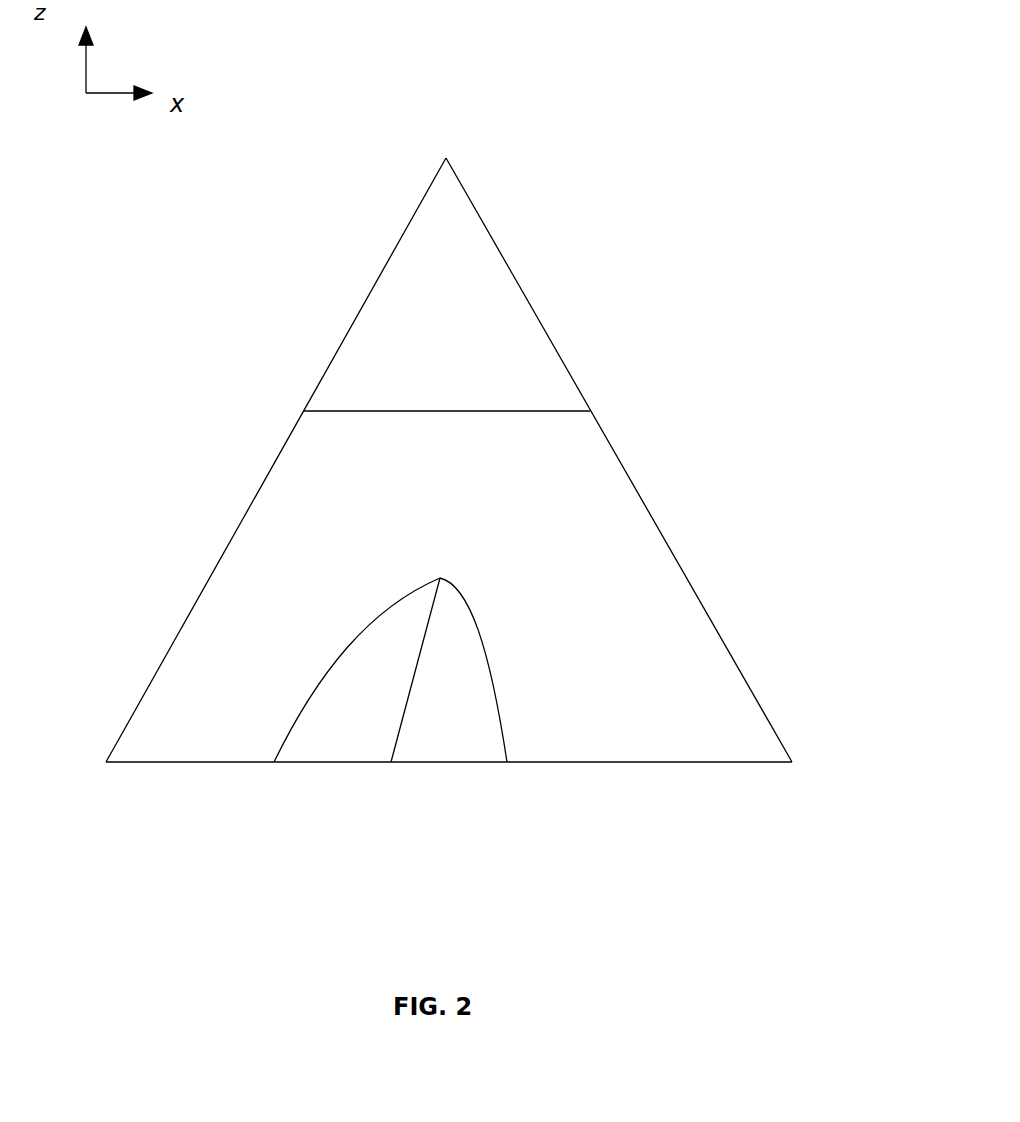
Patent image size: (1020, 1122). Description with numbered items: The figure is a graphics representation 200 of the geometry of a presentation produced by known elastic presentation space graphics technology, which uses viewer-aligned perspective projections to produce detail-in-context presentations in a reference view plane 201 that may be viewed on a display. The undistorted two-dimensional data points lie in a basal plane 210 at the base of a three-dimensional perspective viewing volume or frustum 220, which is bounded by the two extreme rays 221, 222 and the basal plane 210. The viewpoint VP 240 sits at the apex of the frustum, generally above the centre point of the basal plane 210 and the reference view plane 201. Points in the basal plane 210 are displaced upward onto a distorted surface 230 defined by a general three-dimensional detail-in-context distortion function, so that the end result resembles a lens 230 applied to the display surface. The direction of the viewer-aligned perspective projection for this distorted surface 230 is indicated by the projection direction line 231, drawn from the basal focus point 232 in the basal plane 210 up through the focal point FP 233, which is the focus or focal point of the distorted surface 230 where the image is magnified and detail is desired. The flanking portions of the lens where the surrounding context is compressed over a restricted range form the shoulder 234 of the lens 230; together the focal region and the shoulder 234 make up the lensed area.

The graphics representation 200 is at (449, 494).
The reference view plane 201 is at (422, 411).
The basal plane 210 is at (625, 762).
The viewing volume or frustum 220 is at (690, 661).
The extreme ray 221 is at (673, 543).
The extreme ray 222 is at (221, 562).
The distorted surface 230 is at (491, 662).
The line FPo—FP 231 is at (418, 645).
The point FPo 232 is at (393, 764).
The point FP 233 is at (440, 578).
The shoulder 234 is at (306, 712).
The VP 240 is at (452, 158).